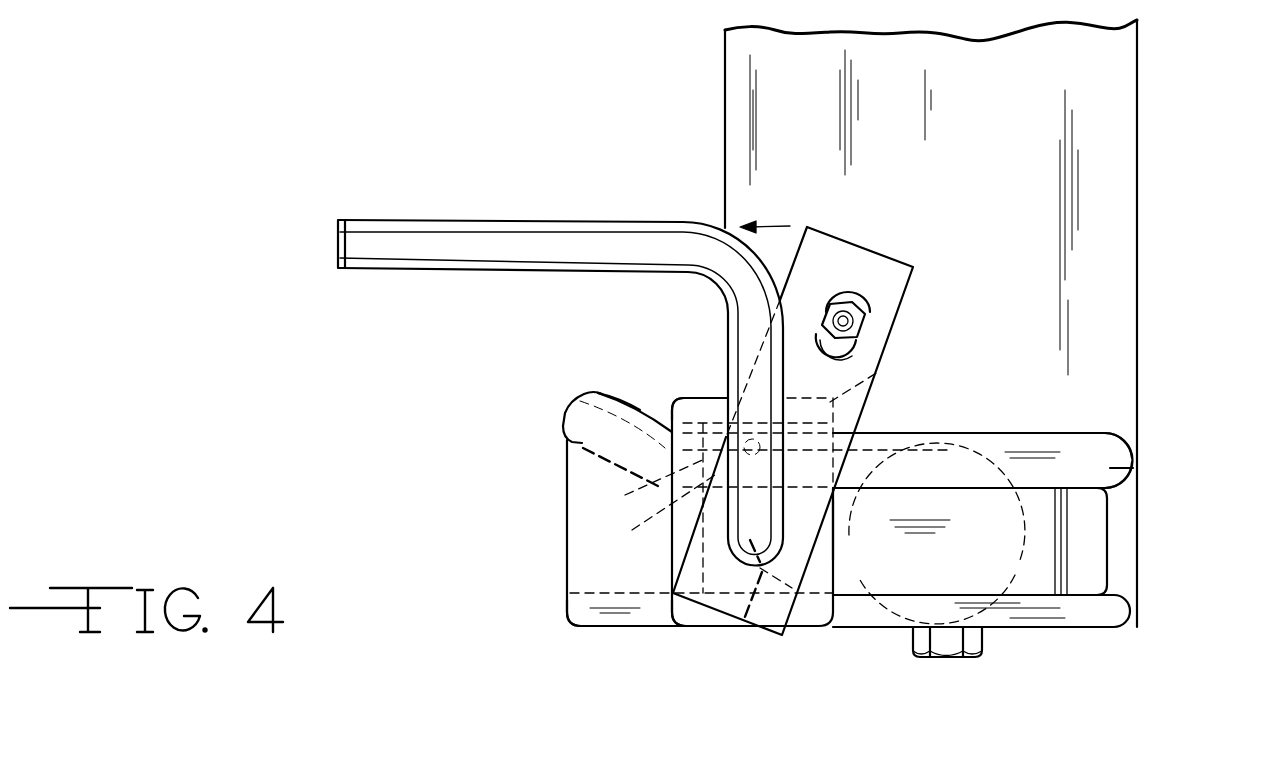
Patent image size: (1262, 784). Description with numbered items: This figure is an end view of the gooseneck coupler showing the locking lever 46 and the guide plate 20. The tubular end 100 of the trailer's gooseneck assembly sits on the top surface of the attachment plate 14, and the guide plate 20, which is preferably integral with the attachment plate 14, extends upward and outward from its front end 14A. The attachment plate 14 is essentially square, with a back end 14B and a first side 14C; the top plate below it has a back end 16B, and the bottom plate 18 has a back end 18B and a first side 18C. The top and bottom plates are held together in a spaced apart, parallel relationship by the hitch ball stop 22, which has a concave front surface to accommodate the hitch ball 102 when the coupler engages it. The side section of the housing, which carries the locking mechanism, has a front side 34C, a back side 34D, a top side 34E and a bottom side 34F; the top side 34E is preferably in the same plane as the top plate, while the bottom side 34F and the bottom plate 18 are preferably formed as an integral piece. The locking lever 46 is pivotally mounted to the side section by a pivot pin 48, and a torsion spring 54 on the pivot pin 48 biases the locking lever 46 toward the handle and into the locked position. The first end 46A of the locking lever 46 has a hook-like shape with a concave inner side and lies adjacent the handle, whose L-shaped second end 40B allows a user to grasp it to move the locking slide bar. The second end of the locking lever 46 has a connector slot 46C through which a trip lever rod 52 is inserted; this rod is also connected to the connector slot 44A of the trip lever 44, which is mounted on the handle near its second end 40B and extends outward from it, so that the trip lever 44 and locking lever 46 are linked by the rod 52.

The tubular end 100 is at (1117, 128).
The locking lever 46 is at (583, 218).
The second end of the handle 40B is at (390, 218).
The trip lever 44 is at (913, 267).
The trip lever rod 52 is at (846, 315).
The connector slot 44A is at (852, 352).
The connector slot 46C is at (862, 336).
The attachment plate 14 is at (668, 430).
The top side 34E is at (711, 398).
The bottom side 34F is at (703, 627).
The back side 34D is at (843, 588).
The front side 34C is at (660, 547).
The guide plate 20 is at (583, 393).
The front end 14A is at (613, 400).
The torsion spring 54 is at (642, 485).
The pivot pin 48 is at (648, 512).
The first end of the locking lever 46A is at (742, 626).
The back end 14B is at (1133, 435).
The first side 14C is at (1100, 432).
The back end 16B is at (1120, 470).
The hitch ball stop 22 is at (1095, 528).
The back end 18B is at (1130, 610).
The first side 18C is at (567, 614).
The bottom plate 18 is at (873, 628).
The hitch ball 102 is at (955, 425).